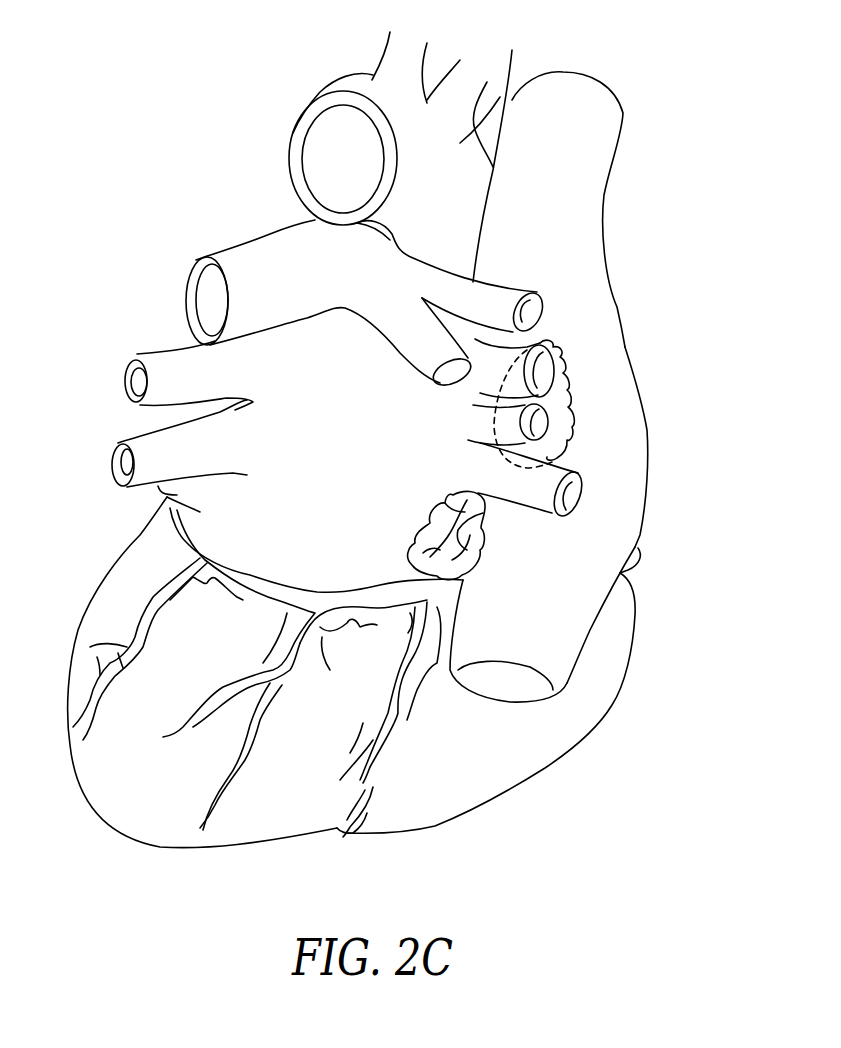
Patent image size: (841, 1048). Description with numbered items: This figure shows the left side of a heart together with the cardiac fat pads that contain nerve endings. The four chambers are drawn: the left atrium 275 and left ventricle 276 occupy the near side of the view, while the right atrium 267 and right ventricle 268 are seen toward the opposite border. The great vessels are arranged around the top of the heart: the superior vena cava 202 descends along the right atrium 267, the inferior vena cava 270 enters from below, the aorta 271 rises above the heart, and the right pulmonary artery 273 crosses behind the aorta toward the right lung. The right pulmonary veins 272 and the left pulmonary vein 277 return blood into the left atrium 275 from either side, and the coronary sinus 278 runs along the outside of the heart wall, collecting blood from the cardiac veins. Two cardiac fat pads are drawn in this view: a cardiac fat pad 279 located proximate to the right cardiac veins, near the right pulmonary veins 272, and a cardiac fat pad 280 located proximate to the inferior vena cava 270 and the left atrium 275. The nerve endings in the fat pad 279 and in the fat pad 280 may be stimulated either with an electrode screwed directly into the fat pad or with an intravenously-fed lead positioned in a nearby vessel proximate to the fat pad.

The superior vena cava 202 is at (590, 133).
The right atrium 267 is at (593, 340).
The right ventricle 268 is at (463, 795).
The inferior vena cava 270 is at (553, 657).
The aorta 271 is at (496, 151).
The right pulmonary veins 272 is at (500, 372).
The right pulmonary artery 273 is at (287, 248).
The left atrium 275 is at (243, 520).
The left ventricle 276 is at (103, 783).
The left pulmonary vein 277 is at (133, 382).
The coronary sinus 278 is at (263, 578).
The cardiac fat pad 279 is at (557, 407).
The cardiac fat pad 280 is at (463, 537).